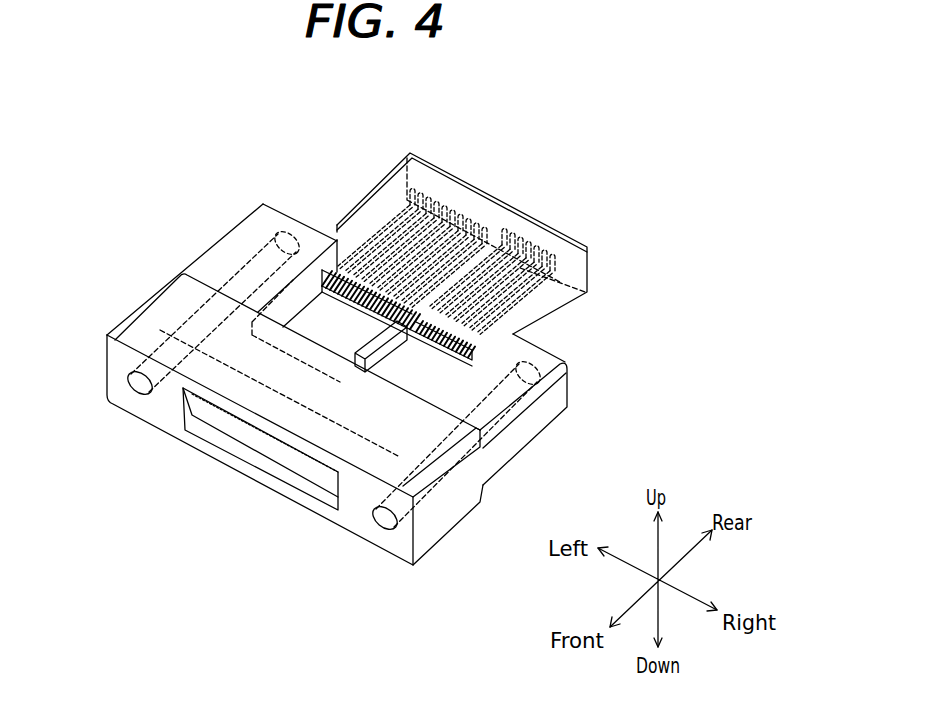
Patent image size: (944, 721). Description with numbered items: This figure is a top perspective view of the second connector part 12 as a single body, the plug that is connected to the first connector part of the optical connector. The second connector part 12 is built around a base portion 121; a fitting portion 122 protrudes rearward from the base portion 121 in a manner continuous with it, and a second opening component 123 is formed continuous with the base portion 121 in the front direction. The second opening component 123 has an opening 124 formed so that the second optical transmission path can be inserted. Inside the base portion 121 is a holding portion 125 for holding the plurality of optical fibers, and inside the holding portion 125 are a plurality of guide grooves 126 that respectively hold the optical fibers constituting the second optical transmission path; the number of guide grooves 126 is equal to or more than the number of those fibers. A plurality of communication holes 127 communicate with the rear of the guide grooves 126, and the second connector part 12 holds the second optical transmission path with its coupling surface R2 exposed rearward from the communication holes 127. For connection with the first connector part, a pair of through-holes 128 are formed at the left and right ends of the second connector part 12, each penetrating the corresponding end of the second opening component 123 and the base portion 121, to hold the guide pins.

The second connector part 12 is at (624, 190).
The base portion 121 is at (519, 431).
The fitting portion 122 is at (549, 309).
The second opening component 123 is at (437, 512).
The opening 124 is at (266, 443).
The holding portion 125 is at (303, 322).
The guide grooves 126 is at (336, 270).
The communication holes 127 is at (425, 240).
The through-holes 128 is at (140, 385).
The coupling surface R2 is at (553, 237).